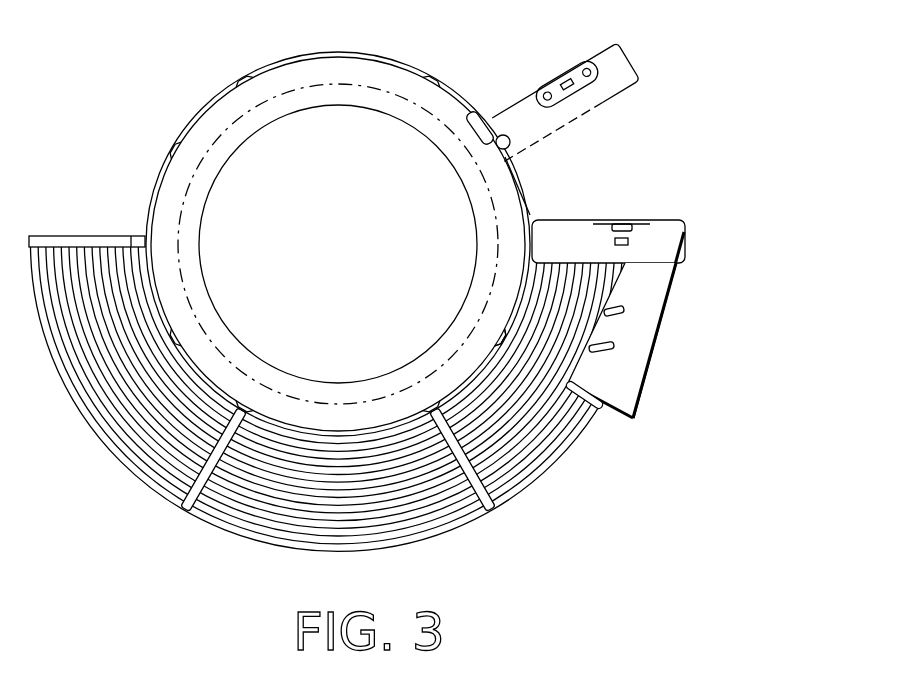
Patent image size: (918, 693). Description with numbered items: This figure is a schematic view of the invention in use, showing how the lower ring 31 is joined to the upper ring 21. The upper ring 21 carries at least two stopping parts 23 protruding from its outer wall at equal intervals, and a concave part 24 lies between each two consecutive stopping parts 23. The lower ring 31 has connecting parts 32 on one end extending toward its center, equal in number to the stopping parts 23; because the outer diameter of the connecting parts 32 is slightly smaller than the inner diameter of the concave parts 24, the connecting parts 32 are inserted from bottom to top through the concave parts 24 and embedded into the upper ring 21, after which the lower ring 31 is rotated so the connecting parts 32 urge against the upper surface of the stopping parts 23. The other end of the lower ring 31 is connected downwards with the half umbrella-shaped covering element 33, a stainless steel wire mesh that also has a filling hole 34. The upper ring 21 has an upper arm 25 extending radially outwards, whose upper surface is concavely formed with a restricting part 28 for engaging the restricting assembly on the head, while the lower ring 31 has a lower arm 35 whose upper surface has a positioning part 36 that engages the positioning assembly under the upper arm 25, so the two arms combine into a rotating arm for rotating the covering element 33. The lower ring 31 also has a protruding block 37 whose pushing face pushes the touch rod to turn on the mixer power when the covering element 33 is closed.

The upper ring 21 is at (277, 78).
The stopping parts 23 is at (288, 418).
The concave part 24 is at (487, 345).
The upper arm 25 is at (560, 80).
The restricting part 28 is at (492, 148).
The lower ring 31 is at (518, 166).
The connecting parts 32 is at (457, 387).
The covering element 33 is at (147, 478).
The filling hole 34 is at (672, 300).
The lower arm 35 is at (683, 220).
The positioning part 36 is at (628, 241).
The protruding block 37 is at (477, 118).